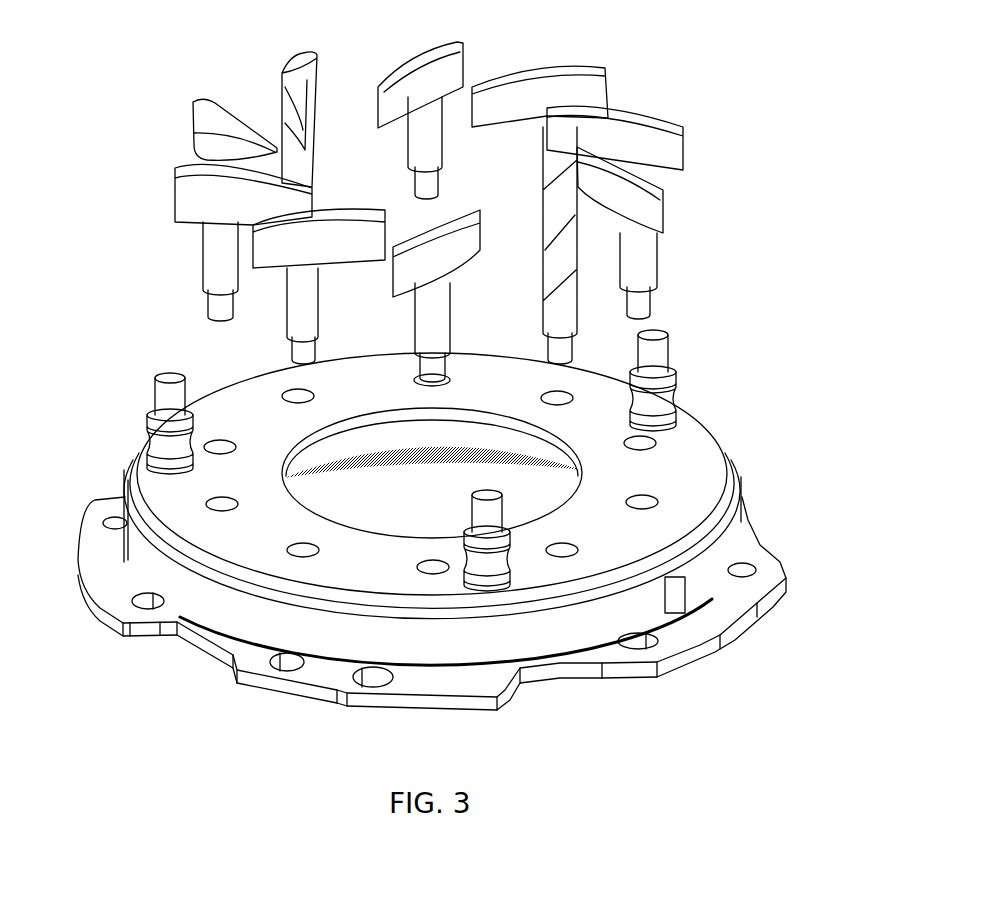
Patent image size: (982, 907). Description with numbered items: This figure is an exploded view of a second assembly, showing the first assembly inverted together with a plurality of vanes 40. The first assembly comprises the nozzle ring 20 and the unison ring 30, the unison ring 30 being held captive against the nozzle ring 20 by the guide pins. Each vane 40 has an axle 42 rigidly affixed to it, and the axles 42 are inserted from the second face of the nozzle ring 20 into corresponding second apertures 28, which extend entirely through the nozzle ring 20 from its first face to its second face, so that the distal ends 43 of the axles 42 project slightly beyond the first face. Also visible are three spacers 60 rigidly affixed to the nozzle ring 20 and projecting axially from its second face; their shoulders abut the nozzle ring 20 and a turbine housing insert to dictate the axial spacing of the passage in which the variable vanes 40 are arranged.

The nozzle ring 20 is at (133, 545).
The second apertures 28 is at (217, 445).
The unison ring 30 is at (728, 633).
The vanes 40 is at (183, 188).
The axles 42 is at (298, 295).
The distal ends 43 is at (300, 350).
The spacers 60 is at (160, 416).